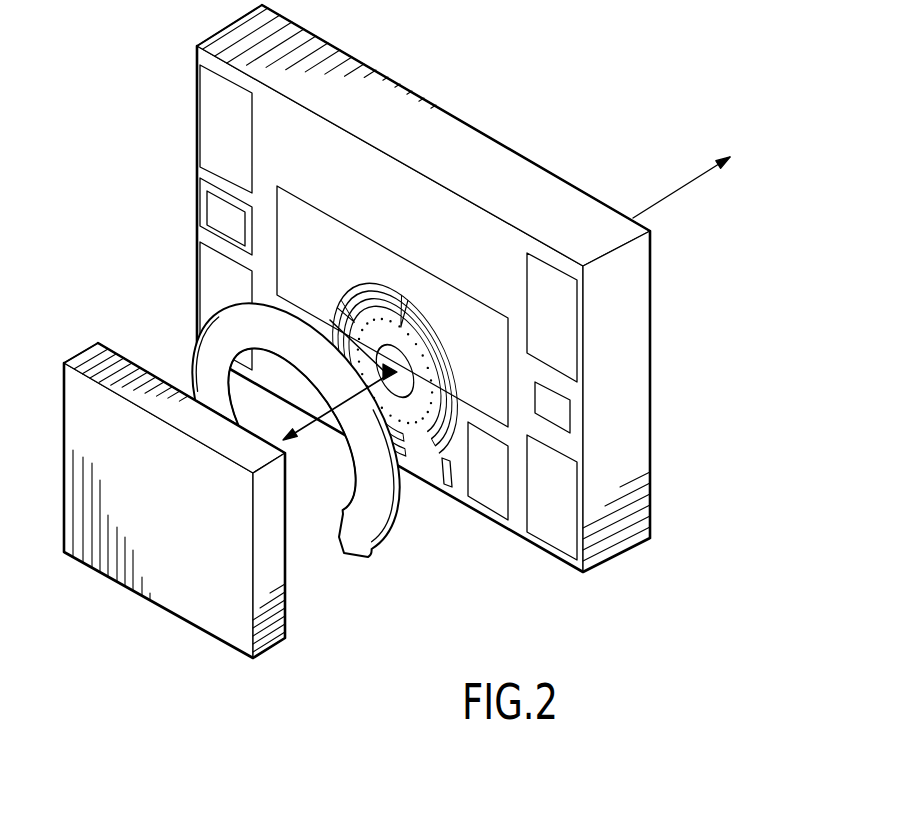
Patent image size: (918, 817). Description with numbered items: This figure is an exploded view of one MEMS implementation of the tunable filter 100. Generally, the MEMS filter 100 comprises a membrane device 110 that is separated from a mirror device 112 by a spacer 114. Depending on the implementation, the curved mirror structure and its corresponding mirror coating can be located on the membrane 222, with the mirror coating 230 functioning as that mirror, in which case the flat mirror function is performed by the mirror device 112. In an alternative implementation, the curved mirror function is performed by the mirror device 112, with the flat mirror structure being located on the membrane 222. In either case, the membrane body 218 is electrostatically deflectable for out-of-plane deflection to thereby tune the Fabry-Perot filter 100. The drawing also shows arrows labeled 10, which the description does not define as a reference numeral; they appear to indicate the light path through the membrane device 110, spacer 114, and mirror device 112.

The light beam 10 is at (681, 187).
The tunable filter 100 is at (516, 288).
The membrane device 110 is at (653, 240).
The mirror device 112 is at (287, 633).
The spacer 114 is at (343, 553).
The membrane body 218 is at (403, 300).
The membrane 222 is at (447, 487).
The mirror coating 230 is at (407, 357).